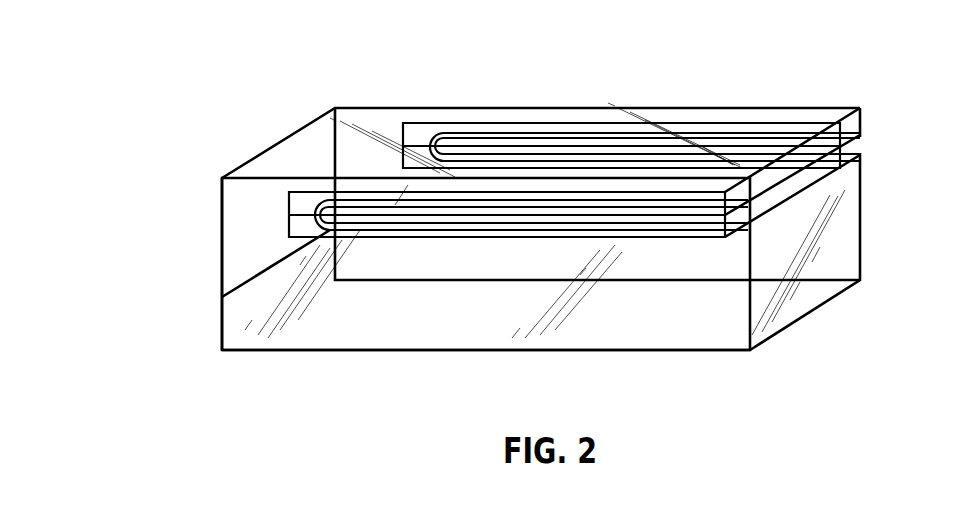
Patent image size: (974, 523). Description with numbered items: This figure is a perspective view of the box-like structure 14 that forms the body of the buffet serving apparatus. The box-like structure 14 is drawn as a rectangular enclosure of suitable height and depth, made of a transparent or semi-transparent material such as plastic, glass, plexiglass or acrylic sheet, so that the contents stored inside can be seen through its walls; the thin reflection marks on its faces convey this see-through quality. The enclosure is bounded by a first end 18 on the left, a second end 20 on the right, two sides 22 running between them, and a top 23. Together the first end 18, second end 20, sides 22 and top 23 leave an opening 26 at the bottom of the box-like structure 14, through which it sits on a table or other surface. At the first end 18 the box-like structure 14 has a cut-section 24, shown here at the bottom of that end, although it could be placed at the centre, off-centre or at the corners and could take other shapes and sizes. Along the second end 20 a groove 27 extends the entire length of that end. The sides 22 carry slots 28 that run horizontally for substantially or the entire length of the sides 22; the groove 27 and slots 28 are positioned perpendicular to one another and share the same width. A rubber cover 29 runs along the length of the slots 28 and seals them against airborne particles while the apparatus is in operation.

The box-like structure 14 is at (213, 80).
The first end 18 is at (222, 240).
The second end 20 is at (840, 250).
The sides 22 is at (835, 106).
The top 23 is at (362, 145).
The cut-section 24 is at (238, 310).
The opening 26 is at (502, 350).
The groove 27 is at (813, 175).
The slots 28 is at (573, 148).
The rubber cover 29 is at (682, 192).